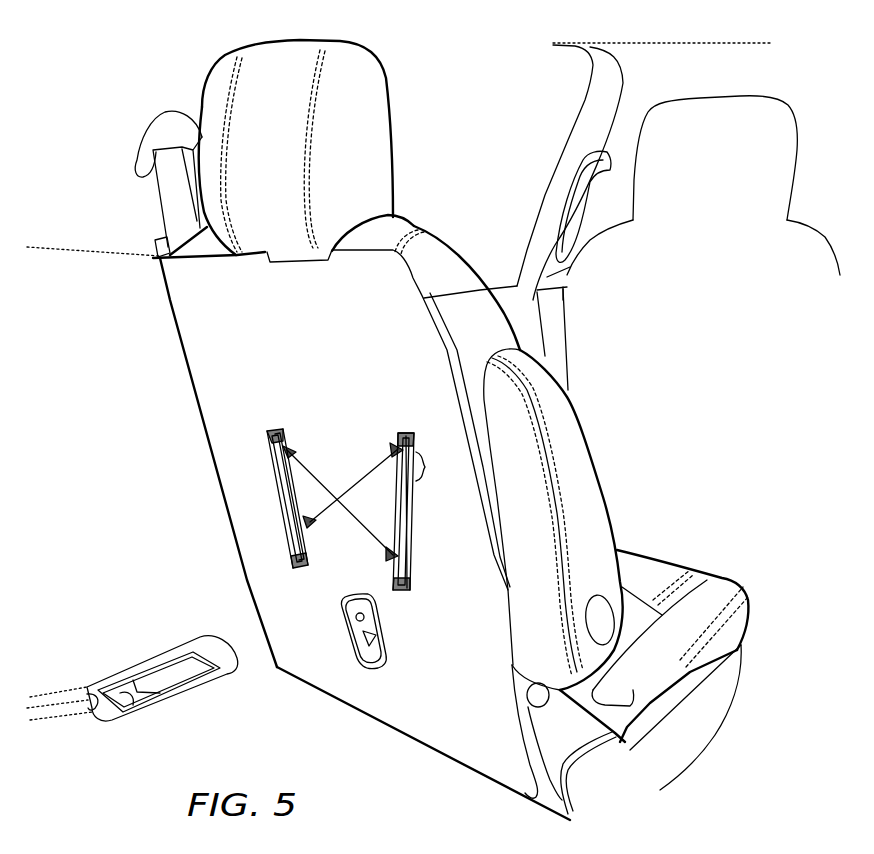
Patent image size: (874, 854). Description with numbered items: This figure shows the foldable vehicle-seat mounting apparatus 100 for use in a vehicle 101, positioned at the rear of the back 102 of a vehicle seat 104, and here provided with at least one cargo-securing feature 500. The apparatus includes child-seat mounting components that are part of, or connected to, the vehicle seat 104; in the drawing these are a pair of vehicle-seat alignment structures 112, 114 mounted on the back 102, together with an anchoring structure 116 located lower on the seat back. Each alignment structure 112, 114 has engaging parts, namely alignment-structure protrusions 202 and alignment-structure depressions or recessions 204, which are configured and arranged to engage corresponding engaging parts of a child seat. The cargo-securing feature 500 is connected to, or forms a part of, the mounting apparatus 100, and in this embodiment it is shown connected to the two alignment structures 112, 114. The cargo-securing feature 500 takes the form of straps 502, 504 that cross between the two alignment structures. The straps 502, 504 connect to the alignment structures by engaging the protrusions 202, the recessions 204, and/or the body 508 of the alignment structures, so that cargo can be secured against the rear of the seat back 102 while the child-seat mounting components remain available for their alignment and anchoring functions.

The vehicle-seat mounting apparatus 100 is at (103, 113).
The vehicle 101 is at (515, 72).
The back 102 is at (300, 314).
The vehicle seat 104 is at (414, 190).
The vehicle-seat alignment structure 112 is at (258, 472).
The vehicle-seat alignment structure 114 is at (453, 562).
The anchoring structure 116 is at (395, 668).
The alignment-structure protrusion 202 is at (426, 467).
The alignment-structure depression or recession 204 is at (418, 437).
The cargo-securing feature 500 is at (307, 437).
The strap 502 is at (350, 548).
The strap 504 is at (350, 548).
The body 508 is at (283, 520).